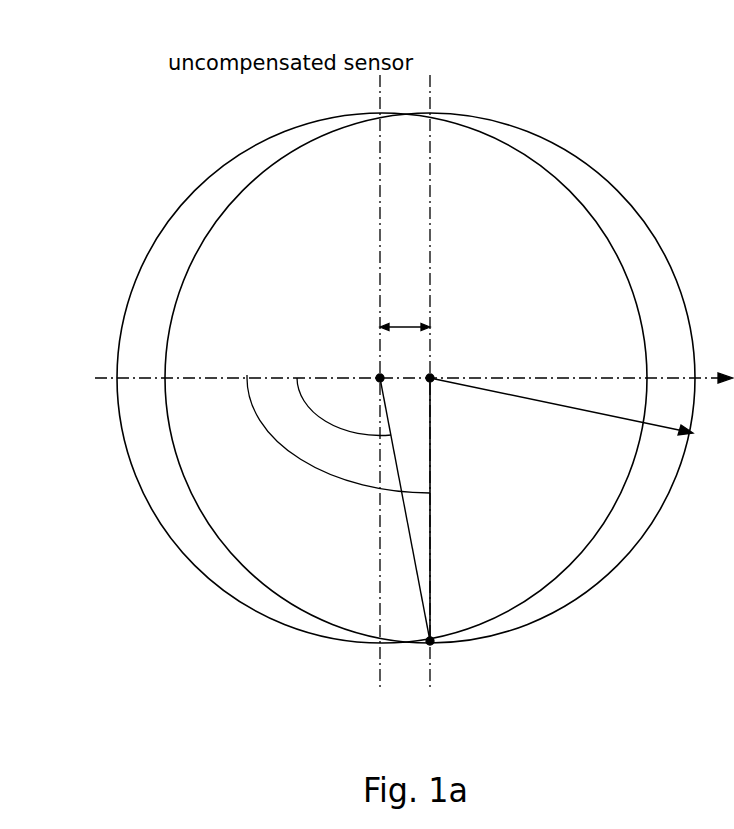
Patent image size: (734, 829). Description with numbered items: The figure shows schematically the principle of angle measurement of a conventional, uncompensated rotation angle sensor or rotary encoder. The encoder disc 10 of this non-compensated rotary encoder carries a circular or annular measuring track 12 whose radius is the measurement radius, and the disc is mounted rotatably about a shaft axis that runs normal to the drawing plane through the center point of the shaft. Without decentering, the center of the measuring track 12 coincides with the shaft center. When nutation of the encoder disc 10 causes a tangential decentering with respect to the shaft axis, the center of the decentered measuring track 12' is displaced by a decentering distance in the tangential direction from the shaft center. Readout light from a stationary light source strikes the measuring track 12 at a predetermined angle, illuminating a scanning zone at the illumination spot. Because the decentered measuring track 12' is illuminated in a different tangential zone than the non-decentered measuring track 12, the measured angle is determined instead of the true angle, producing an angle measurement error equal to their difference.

The encoder disc 10 is at (190, 158).
The measuring track 12 is at (430, 371).
The decentered measuring track 12' is at (414, 378).